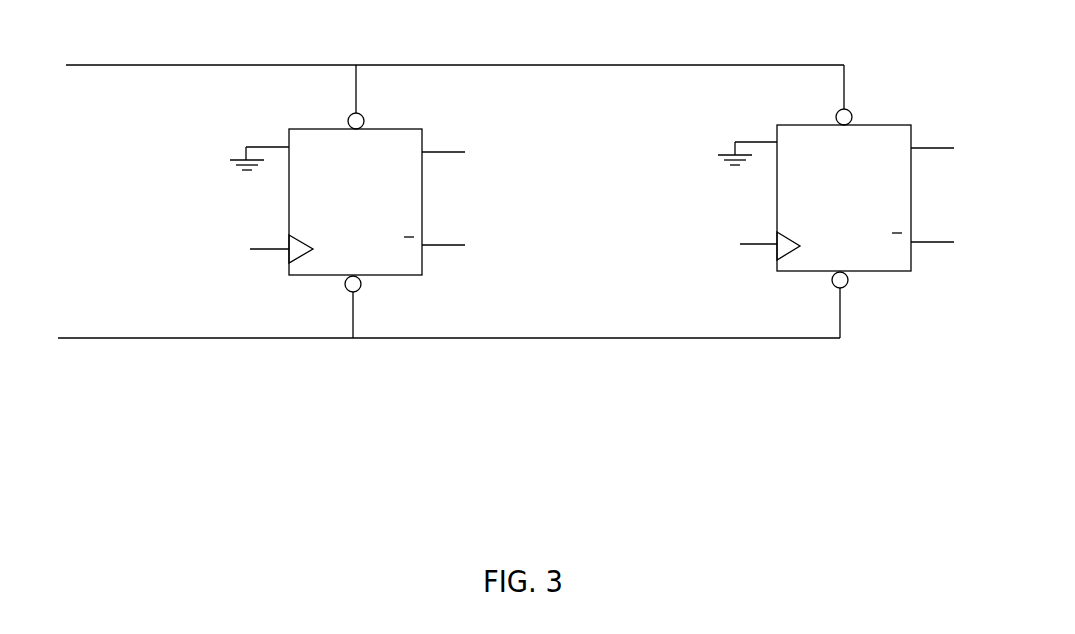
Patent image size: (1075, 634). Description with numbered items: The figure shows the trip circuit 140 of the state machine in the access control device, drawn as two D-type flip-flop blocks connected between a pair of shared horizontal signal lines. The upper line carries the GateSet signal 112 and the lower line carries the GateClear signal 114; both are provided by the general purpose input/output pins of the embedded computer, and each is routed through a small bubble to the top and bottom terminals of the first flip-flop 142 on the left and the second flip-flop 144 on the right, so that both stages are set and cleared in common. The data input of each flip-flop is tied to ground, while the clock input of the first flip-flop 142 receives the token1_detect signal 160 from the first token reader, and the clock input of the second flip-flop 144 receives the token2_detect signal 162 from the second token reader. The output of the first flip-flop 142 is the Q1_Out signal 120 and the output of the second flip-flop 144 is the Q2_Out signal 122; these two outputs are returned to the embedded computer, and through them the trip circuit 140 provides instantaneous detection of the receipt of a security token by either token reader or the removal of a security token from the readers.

The GateSet signal 112 is at (438, 39).
The GateClear signal 114 is at (424, 369).
The Q1_Out signal 120 is at (491, 192).
The Q2_Out signal 122 is at (979, 189).
The trip circuit 140 is at (183, 475).
The first flip-flop 142 is at (330, 141).
The second flip-flop 144 is at (818, 135).
The token1_detect signal 160 is at (198, 260).
The token2_detect signal 162 is at (685, 258).